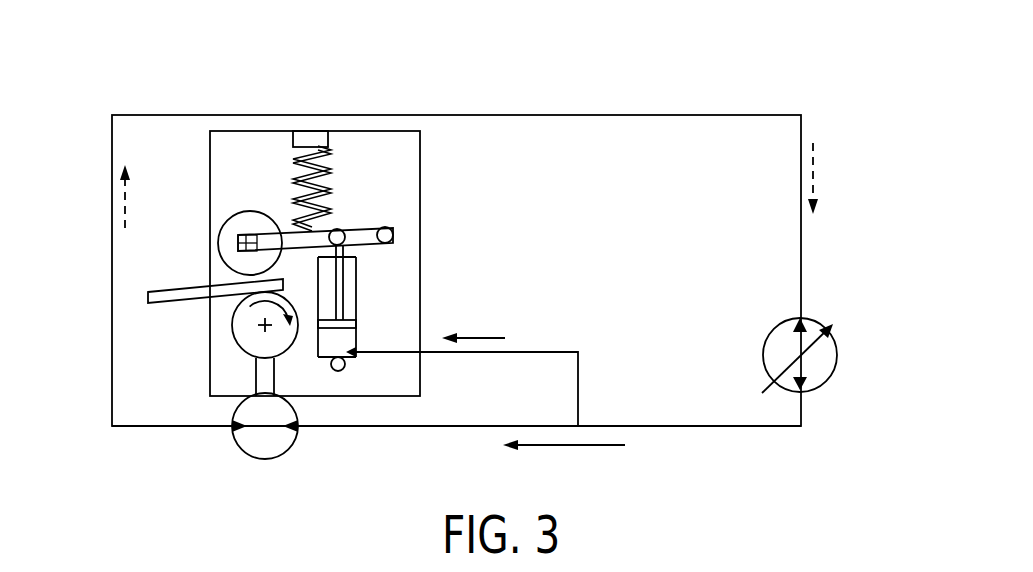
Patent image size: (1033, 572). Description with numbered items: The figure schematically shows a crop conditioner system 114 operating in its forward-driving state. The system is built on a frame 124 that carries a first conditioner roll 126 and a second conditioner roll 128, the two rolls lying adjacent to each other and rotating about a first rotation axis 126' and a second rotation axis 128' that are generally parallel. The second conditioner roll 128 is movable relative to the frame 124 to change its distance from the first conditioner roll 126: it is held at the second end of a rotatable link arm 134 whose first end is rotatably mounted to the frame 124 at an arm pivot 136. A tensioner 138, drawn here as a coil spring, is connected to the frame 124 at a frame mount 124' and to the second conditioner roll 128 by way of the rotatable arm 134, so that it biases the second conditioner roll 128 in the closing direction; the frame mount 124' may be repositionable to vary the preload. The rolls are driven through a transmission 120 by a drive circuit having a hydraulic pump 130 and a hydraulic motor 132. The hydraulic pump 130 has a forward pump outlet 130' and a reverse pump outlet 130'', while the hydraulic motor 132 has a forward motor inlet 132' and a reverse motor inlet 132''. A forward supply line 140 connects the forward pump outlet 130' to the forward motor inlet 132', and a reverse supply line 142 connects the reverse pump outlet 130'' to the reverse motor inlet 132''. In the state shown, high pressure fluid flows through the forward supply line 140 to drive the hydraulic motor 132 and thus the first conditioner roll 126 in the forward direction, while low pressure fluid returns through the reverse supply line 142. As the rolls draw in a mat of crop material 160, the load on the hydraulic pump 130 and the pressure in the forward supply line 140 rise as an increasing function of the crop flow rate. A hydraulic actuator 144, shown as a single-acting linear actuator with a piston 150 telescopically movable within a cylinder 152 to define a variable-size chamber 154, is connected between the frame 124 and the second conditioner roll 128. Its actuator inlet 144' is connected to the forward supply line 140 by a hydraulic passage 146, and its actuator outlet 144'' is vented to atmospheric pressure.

The crop conditioner system 114 is at (640, 69).
The transmission 120 is at (250, 373).
The frame 124 is at (315, 225).
The frame mount 124' is at (309, 87).
The first conditioner roll 126 is at (221, 341).
The first rotation axis 126' is at (163, 332).
The second conditioner roll 128 is at (218, 163).
The second rotation axis 128' is at (150, 249).
The hydraulic pump 130 is at (857, 344).
The forward pump outlet 130' is at (842, 302).
The reverse pump outlet 130'' is at (848, 402).
The hydraulic motor 132 is at (292, 447).
The forward motor inlet 132' is at (222, 465).
The reverse motor inlet 132'' is at (338, 443).
The rotatable link arm 134 is at (343, 231).
The arm pivot 136 is at (386, 229).
The tensioner 138 is at (292, 178).
The forward supply line 140 is at (668, 427).
The reverse supply line 142 is at (542, 115).
The hydraulic actuator 144 is at (454, 307).
The actuator inlet 144' is at (403, 378).
The actuator outlet 144'' is at (426, 252).
The hydraulic passage 146 is at (579, 387).
The piston 150 is at (343, 323).
The cylinder 152 is at (357, 297).
The variable-size chamber 154 is at (342, 362).
The crop material 160 is at (148, 297).